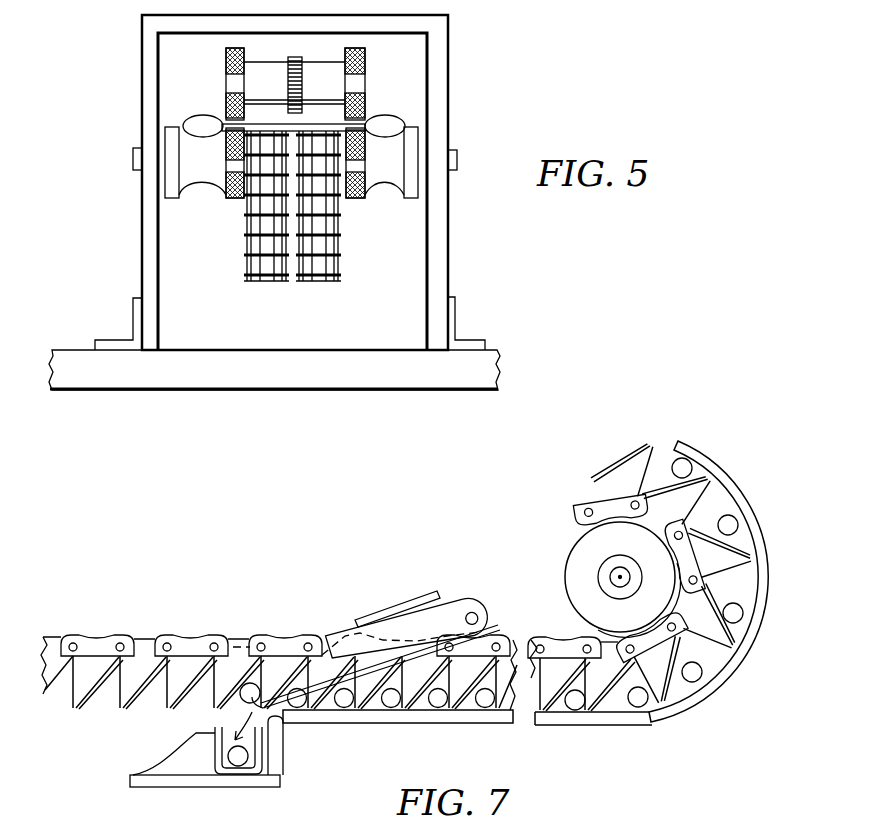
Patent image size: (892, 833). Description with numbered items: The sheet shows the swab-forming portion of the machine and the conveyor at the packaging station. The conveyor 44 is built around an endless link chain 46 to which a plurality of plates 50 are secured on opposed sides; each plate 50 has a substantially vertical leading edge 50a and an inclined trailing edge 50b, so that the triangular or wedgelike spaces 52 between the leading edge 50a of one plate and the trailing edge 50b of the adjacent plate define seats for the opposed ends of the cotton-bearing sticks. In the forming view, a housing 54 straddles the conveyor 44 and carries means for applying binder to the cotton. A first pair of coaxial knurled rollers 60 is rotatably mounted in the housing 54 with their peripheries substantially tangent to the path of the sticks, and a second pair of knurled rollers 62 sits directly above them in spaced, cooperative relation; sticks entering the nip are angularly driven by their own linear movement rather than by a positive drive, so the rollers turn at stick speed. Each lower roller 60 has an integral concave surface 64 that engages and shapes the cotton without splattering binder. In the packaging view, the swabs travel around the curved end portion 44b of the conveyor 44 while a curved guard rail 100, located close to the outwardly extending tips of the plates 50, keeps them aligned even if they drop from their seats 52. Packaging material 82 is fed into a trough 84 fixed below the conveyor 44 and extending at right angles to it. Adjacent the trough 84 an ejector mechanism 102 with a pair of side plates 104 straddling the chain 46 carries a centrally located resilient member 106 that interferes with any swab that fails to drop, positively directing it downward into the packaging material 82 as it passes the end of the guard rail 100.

In FIG. 5, the conveyor 44 is at (357, 257).
In FIG. 7, the conveyor 44 is at (245, 621).
In FIG. 7, the curved end portion of the conveyor 44b is at (745, 434).
In FIG. 5, the endless link chain 46 is at (267, 252).
In FIG. 7, the plates 50 is at (92, 650).
In FIG. 7, the leading edge 50a is at (165, 688).
In FIG. 7, the inclined trailing edge 50b is at (92, 704).
In FIG. 7, the wedgelike spaces 52 is at (618, 703).
In FIG. 5, the housing 54 is at (448, 72).
In FIG. 5, the knurled rollers 60 is at (205, 184).
In FIG. 5, the knurled rollers 62 is at (226, 58).
In FIG. 5, the concave surface 64 is at (234, 166).
In FIG. 7, the packaging material 82 is at (223, 773).
In FIG. 7, the trough 84 is at (284, 766).
In FIG. 7, the guard rail 100 is at (757, 658).
In FIG. 7, the ejector mechanism 102 is at (449, 577).
In FIG. 7, the side plates 104 is at (456, 609).
In FIG. 7, the resilient member 106 is at (248, 640).